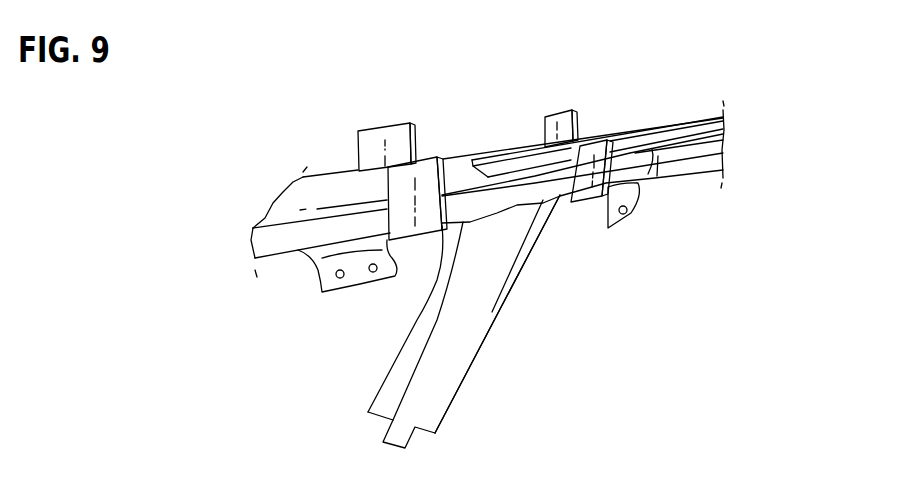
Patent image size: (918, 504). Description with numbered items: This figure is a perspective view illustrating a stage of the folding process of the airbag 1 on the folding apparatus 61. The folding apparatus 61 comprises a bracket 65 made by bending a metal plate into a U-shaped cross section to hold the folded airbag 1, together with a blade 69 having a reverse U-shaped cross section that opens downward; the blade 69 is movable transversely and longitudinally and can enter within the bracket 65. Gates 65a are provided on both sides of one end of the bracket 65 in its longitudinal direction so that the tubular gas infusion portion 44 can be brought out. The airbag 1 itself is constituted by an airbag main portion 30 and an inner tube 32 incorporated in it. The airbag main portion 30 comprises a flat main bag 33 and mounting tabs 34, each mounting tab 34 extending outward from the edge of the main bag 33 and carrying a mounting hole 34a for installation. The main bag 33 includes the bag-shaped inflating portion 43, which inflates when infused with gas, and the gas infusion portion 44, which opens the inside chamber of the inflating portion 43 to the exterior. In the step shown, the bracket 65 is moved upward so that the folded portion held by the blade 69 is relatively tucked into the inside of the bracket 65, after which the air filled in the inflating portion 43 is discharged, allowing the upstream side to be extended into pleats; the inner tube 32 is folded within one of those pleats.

The airbag 1 is at (455, 403).
The airbag main portion 30 is at (483, 355).
The inner tube 32 is at (530, 279).
The main bag 33 is at (524, 272).
The mounting tab 34 is at (318, 273).
The mounting hole 34a is at (372, 273).
The inflating portion 43 is at (471, 202).
The gas infusion portion 44 is at (382, 382).
The folding apparatus 61 is at (265, 116).
The bracket 65 is at (390, 124).
The gate 65a is at (522, 140).
The blade 69 is at (321, 195).